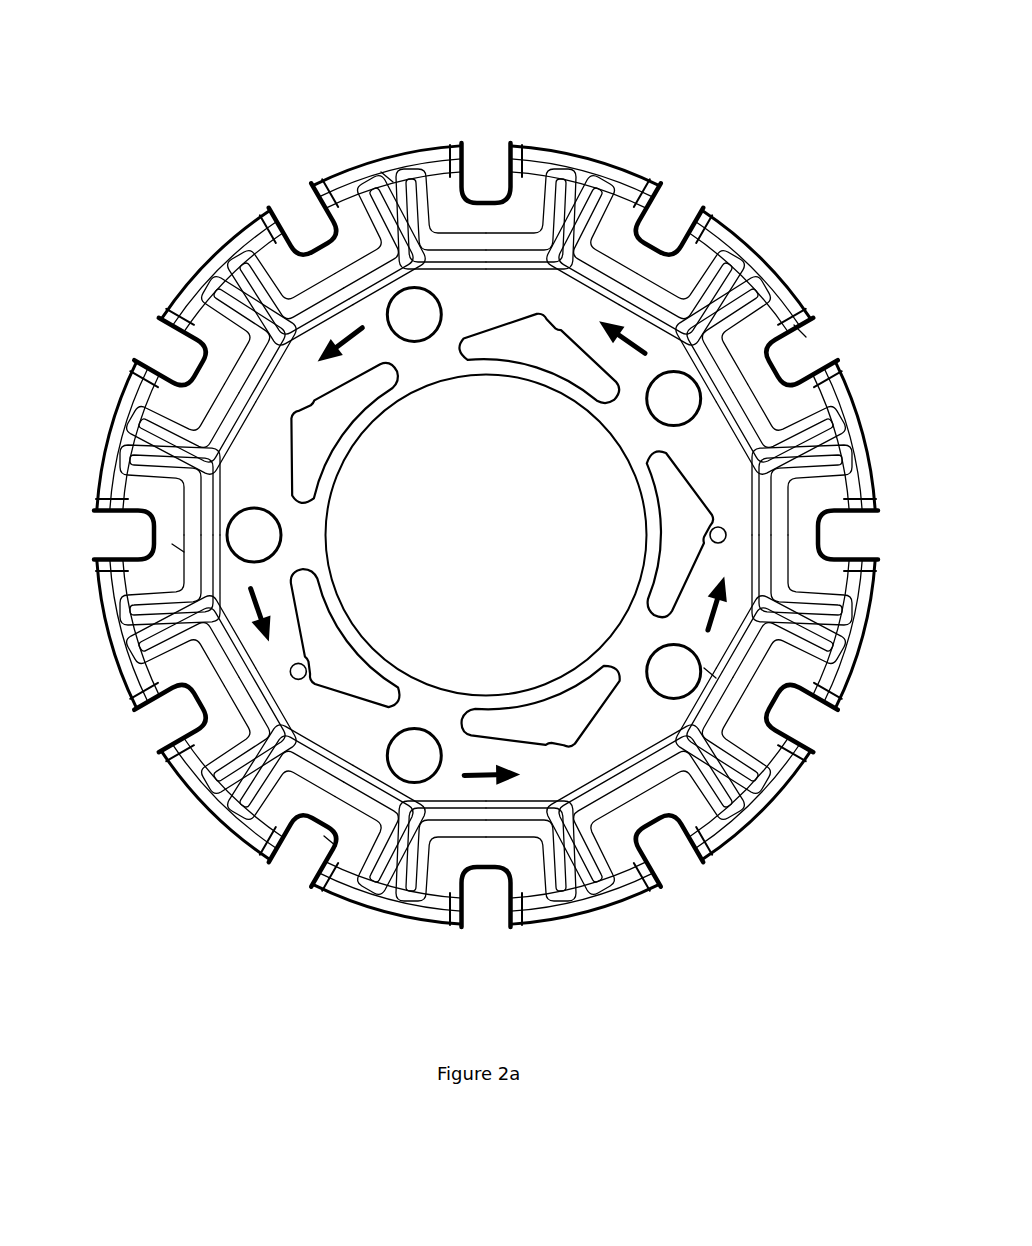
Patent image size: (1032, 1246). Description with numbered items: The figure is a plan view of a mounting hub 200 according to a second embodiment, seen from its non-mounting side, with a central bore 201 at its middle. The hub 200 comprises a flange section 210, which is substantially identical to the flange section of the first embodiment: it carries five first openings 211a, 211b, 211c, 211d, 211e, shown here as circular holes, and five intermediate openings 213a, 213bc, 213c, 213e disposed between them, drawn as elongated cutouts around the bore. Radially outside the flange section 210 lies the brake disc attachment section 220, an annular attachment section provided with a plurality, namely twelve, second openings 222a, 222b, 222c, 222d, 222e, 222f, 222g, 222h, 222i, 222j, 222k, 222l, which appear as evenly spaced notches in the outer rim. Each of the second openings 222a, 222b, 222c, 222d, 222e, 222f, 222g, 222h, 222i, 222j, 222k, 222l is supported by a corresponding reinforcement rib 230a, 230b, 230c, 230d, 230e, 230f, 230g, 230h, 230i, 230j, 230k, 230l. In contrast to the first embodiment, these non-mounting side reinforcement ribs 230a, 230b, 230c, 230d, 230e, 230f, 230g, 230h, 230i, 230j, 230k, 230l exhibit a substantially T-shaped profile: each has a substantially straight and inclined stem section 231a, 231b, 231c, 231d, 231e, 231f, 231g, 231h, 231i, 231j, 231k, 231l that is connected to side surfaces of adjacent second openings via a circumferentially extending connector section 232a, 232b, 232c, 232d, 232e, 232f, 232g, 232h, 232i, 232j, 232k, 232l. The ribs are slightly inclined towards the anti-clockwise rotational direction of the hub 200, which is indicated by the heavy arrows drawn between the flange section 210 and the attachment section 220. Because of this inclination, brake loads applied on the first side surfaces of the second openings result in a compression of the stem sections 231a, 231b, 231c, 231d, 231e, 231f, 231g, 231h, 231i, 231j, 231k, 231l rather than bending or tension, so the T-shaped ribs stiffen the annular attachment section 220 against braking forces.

The hub 200 is at (112, 111).
The central bore 201 is at (512, 561).
The flange section 210 is at (847, 377).
The brake disc attachment section 220 is at (712, 212).
The first opening 211a is at (800, 331).
The first opening 211b is at (710, 673).
The first opening 211c is at (330, 841).
The first opening 211d is at (178, 548).
The first opening 211e is at (387, 177).
The intermediate opening 213a is at (662, 535).
The cutout 213bc is at (535, 700).
The intermediate opening 213c is at (348, 647).
The intermediate opening 213e is at (542, 367).
The second opening 222a is at (661, 232).
The second opening 222b is at (789, 360).
The second opening 222c is at (836, 535).
The second opening 222d is at (789, 710).
The second opening 222e is at (661, 838).
The second opening 222f is at (486, 885).
The second opening 222g is at (311, 838).
The second opening 222h is at (183, 710).
The second opening 222i is at (136, 535).
The second opening 222j is at (183, 360).
The second opening 222k is at (311, 232).
The second opening 222l is at (486, 185).
The reinforcement rib 230a is at (712, 309).
The reinforcement rib 230b is at (823, 442).
The reinforcement rib 230c is at (780, 623).
The reinforcement rib 230d is at (712, 761).
The reinforcement rib 230e is at (569, 844).
The reinforcement rib 230f is at (403, 844).
The reinforcement rib 230g is at (260, 761).
The reinforcement rib 230h is at (177, 618).
The reinforcement rib 230i is at (177, 452).
The reinforcement rib 230j is at (250, 270).
The reinforcement rib 230k is at (393, 278).
The reinforcement rib 230l is at (520, 188).
The stem section 231a is at (755, 284).
The stem section 231b is at (837, 463).
The stem section 231c is at (837, 598).
The stem section 231d is at (737, 804).
The stem section 231e is at (569, 894).
The stem section 231f is at (378, 887).
The stem section 231g is at (217, 786).
The stem section 231h is at (127, 618).
The stem section 231i is at (134, 427).
The stem section 231j is at (255, 240).
The stem section 231k is at (432, 185).
The stem section 231l is at (606, 200).
The connector section 232a is at (746, 301).
The connector section 232b is at (830, 405).
The connector section 232c is at (840, 662).
The connector section 232d is at (720, 795).
The connector section 232e is at (559, 877).
The connector section 232f is at (378, 868).
The connector section 232g is at (226, 769).
The connector section 232h is at (144, 608).
The connector section 232i is at (153, 427).
The connector section 232j is at (250, 257).
The connector section 232k is at (418, 235).
The connector section 232l is at (540, 245).